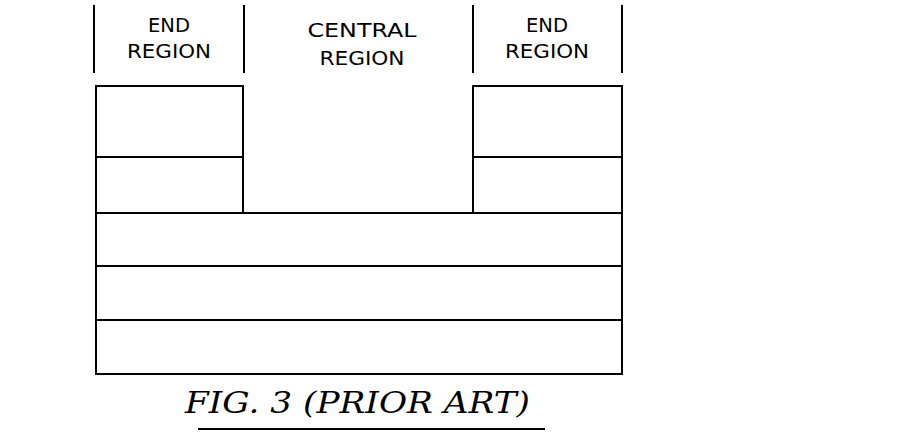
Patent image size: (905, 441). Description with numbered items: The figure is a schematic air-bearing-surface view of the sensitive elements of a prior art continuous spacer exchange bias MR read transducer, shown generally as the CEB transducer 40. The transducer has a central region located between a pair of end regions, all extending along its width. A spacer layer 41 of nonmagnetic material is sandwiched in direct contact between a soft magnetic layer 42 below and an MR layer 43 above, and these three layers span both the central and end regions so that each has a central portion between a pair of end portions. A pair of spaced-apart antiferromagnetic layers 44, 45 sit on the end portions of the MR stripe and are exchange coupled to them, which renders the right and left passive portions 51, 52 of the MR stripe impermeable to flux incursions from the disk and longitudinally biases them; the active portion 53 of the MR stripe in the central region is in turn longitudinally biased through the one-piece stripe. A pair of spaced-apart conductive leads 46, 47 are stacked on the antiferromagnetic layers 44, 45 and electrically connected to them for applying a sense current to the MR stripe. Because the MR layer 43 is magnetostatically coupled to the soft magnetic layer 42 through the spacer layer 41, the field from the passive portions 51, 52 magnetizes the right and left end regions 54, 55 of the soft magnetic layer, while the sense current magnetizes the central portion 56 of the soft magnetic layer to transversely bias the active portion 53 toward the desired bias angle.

The CEB transducer 40 is at (692, 153).
The spacer layer 41 is at (614, 292).
The soft magnetic layer 42 is at (460, 306).
The MR layer 43 is at (270, 200).
The antiferromagnetic layer 44 is at (614, 190).
The antiferromagnetic layer 45 is at (110, 184).
The conductive lead 46 is at (614, 108).
The conductive lead 47 is at (110, 123).
The right passive portion of the MR stripe 51 is at (614, 236).
The left passive portion of the MR stripe 52 is at (112, 238).
The active portion of the MR stripe 53 is at (315, 232).
The right end region of the soft magnetic layer 54 is at (614, 349).
The left end region of the soft magnetic layer 55 is at (112, 353).
The central portion of the soft magnetic layer 56 is at (424, 340).